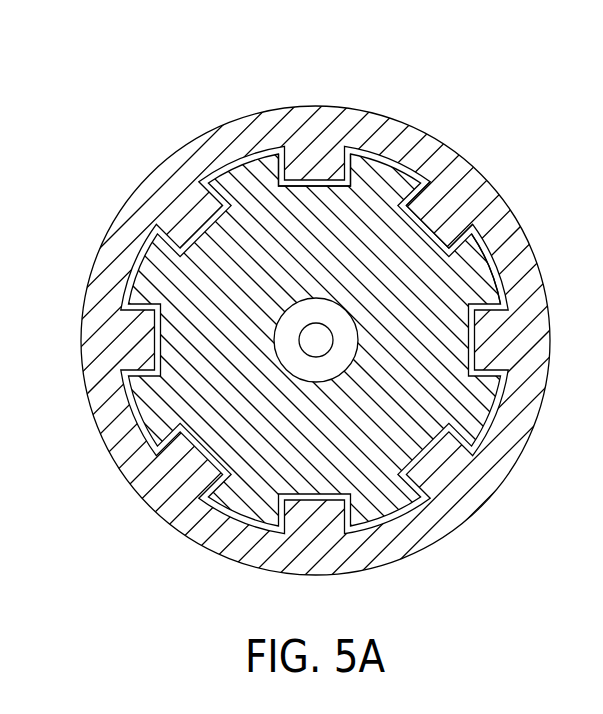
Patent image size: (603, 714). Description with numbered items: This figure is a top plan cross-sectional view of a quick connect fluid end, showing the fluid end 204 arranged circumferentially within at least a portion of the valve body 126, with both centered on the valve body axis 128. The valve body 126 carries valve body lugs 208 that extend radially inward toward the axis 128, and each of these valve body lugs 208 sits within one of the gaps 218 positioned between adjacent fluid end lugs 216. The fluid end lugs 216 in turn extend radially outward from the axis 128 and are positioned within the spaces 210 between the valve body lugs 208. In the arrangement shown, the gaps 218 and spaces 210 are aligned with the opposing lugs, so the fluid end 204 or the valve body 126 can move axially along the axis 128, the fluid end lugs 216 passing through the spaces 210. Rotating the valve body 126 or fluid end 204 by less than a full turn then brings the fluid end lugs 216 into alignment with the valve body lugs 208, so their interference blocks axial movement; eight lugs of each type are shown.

The valve body 126 is at (465, 57).
The valve body axis 128 is at (316, 358).
The fluid end 204 is at (229, 268).
The valve body lugs 208 is at (455, 193).
The spaces 210 is at (504, 269).
The fluid end lugs 216 is at (377, 180).
The gaps 218 is at (288, 166).